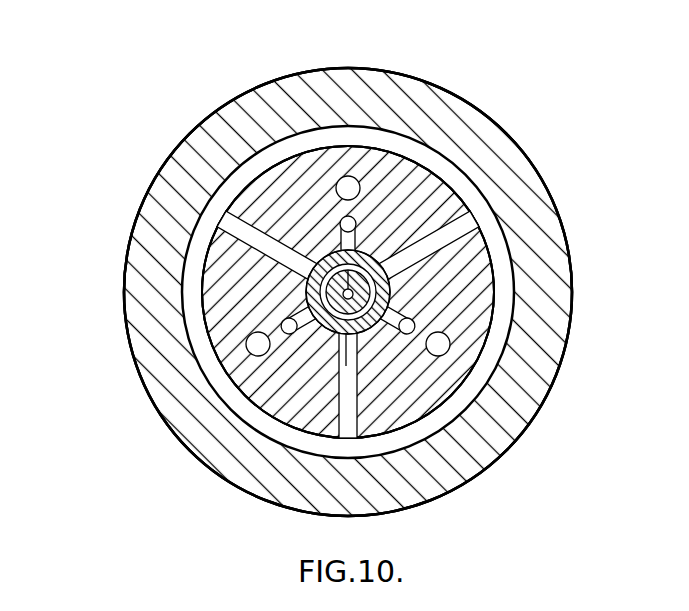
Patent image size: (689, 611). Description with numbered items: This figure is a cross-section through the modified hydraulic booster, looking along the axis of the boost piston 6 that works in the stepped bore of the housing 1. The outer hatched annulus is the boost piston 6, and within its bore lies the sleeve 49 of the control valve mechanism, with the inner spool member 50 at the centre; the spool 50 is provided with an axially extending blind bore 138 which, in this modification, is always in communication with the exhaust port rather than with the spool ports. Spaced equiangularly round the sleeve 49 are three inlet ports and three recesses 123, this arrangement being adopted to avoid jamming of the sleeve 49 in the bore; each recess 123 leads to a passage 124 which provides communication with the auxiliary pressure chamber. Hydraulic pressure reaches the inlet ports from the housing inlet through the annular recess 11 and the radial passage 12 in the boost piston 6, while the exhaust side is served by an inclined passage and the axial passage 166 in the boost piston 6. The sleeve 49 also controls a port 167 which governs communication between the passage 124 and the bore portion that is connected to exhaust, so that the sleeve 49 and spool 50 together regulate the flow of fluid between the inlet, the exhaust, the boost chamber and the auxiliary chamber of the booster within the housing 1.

The housing 1 is at (481, 108).
The boost piston 6 is at (463, 160).
The annular recess 11 is at (478, 382).
The radial passage 12 is at (230, 223).
The sleeve 49 is at (493, 283).
The inner spool member 50 is at (438, 205).
The recess 123 is at (250, 160).
The passage 124 is at (385, 180).
The blind bore 138 is at (320, 352).
The axial passage 166 is at (347, 178).
The port 167 is at (470, 468).